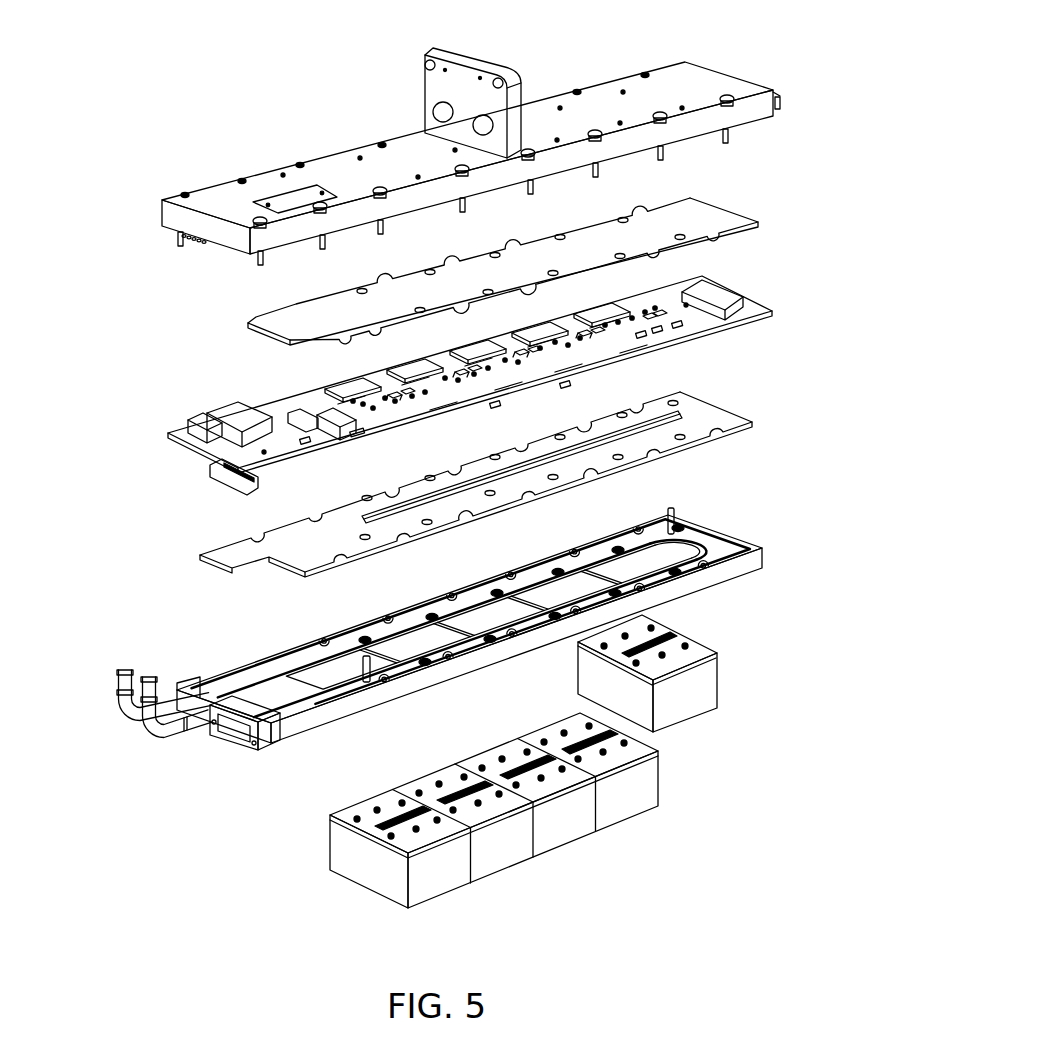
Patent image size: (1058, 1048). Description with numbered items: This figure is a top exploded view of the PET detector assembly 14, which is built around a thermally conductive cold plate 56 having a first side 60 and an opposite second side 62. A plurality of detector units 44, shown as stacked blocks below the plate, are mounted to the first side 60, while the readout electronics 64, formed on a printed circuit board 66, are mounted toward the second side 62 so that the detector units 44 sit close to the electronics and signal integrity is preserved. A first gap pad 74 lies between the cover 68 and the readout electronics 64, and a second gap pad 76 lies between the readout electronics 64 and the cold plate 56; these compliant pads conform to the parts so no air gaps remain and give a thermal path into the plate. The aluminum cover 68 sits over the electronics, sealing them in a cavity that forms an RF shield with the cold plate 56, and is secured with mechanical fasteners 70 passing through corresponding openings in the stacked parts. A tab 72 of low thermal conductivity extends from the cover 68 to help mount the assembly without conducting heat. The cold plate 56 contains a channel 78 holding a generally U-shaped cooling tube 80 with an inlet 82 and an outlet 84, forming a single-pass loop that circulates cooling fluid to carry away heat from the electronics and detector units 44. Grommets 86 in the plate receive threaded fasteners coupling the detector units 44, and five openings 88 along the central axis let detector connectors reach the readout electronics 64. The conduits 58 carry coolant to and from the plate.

The PET detector assembly 14 is at (806, 104).
The detector units 44 is at (690, 721).
The cold plate 56 is at (710, 560).
The coolant conduits 58 is at (148, 731).
The first side 60 is at (690, 588).
The second side 62 is at (708, 540).
The readout electronics section 64 is at (757, 307).
The printed circuit board 66 is at (750, 326).
The cover 68 is at (720, 82).
The mechanical fasteners 70 is at (731, 141).
The tab 72 is at (490, 62).
The first gap pad 74 is at (705, 217).
The second gap pad 76 is at (730, 422).
The channel 78 is at (303, 682).
The cooling tube 80 is at (185, 737).
The inlet 82 is at (118, 663).
The outlet 84 is at (148, 672).
The grommets 86 is at (555, 568).
The openings 88 is at (405, 650).